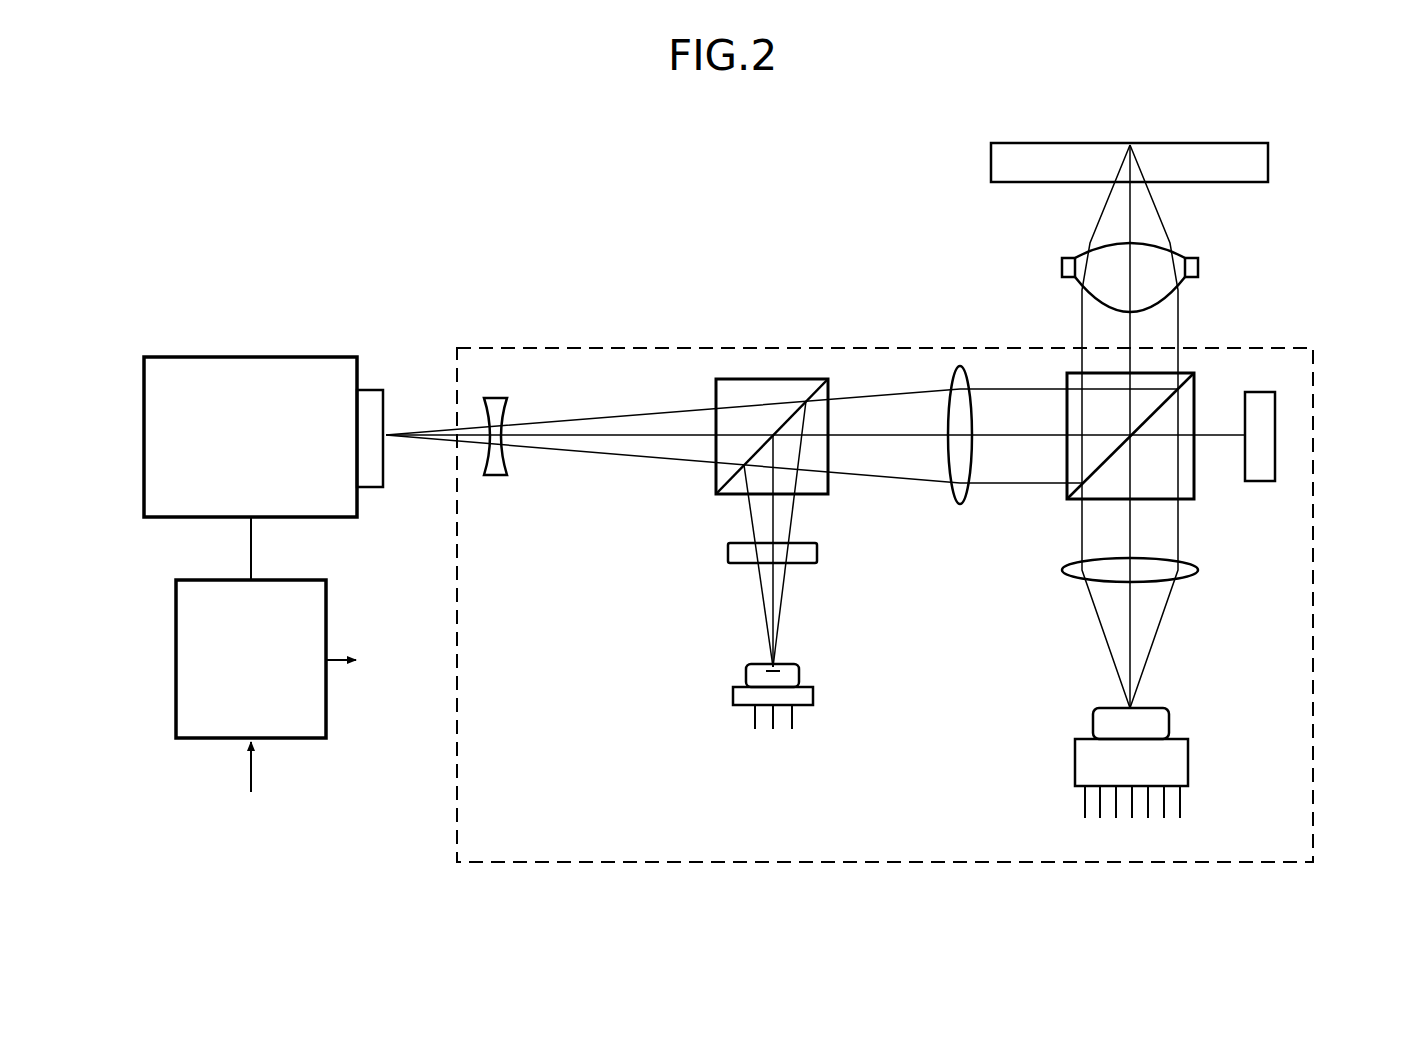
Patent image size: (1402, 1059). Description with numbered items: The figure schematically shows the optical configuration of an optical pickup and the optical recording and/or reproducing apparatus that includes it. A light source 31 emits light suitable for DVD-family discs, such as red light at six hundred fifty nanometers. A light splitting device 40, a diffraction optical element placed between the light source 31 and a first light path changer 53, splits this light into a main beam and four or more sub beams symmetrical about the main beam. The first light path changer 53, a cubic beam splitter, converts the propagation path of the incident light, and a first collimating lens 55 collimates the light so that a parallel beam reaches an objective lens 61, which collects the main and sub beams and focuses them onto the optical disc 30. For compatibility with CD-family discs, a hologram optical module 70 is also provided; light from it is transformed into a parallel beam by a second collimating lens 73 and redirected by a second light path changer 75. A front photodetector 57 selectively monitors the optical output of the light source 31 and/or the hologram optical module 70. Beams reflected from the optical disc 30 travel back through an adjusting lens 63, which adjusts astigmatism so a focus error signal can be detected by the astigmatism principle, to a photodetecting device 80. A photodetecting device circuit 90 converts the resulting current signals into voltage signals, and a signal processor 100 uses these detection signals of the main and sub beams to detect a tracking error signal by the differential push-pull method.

The optical disc 30 is at (1268, 182).
The light source 31 is at (733, 695).
The light splitting device 40 is at (728, 552).
The first light path changer 53 is at (773, 379).
The first collimating lens 55 is at (957, 505).
The front photodetector 57 is at (1278, 422).
The objective lens 61 is at (1200, 268).
The adjusting lens 63 is at (497, 398).
The hologram optical module 70 is at (1200, 747).
The second collimating lens 73 is at (1067, 576).
The second light path changer 75 is at (1067, 497).
The photodetecting device 80 is at (375, 390).
The photodetecting device circuit 90 is at (255, 357).
The signal processor 100 is at (328, 722).